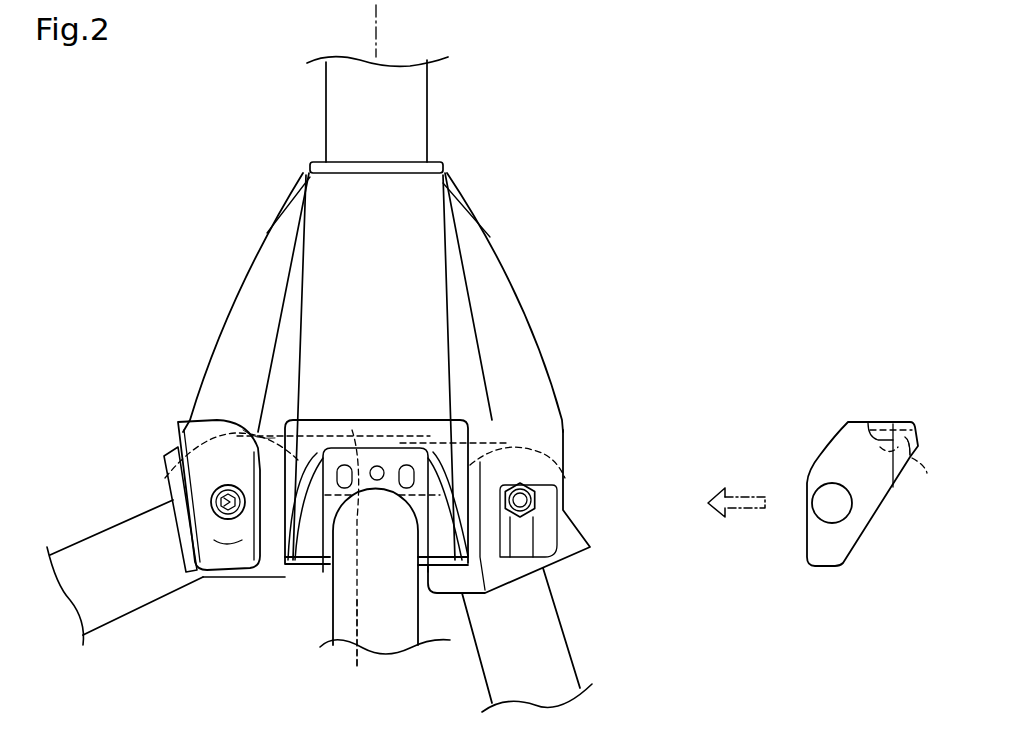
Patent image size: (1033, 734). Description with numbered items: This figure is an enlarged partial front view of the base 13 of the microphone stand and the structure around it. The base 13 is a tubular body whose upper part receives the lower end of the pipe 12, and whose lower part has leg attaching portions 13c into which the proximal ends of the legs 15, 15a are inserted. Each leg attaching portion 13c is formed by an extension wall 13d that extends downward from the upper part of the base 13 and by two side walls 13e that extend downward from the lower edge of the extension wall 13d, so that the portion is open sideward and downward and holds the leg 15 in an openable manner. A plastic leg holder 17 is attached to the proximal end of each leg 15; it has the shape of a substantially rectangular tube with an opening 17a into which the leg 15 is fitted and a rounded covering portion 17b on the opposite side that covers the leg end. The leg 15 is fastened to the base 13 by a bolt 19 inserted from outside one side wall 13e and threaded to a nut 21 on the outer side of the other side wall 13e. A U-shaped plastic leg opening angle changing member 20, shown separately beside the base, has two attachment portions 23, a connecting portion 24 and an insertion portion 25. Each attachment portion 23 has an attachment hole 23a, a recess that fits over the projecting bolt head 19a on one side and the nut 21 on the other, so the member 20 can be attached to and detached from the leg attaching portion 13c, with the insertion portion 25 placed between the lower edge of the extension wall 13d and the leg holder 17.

The pipe 12 is at (326, 108).
The base 13 is at (497, 238).
The leg attaching portion 13c is at (394, 568).
The extension wall 13d is at (423, 297).
The side wall 13e is at (247, 436).
The leg 15 is at (80, 537).
The leg 15a is at (567, 637).
The leg holder 17 is at (352, 430).
The opening 17a is at (383, 502).
The covering portion 17b is at (320, 540).
The bolt 19 is at (535, 500).
The bolt head 19a is at (212, 493).
The leg opening angle changing member 20 is at (173, 438).
The nut 21 is at (528, 482).
The attachment portion 23 is at (275, 438).
The attachment hole 23a is at (230, 523).
The connecting portion 24 is at (391, 447).
The insertion portion 25 is at (927, 481).